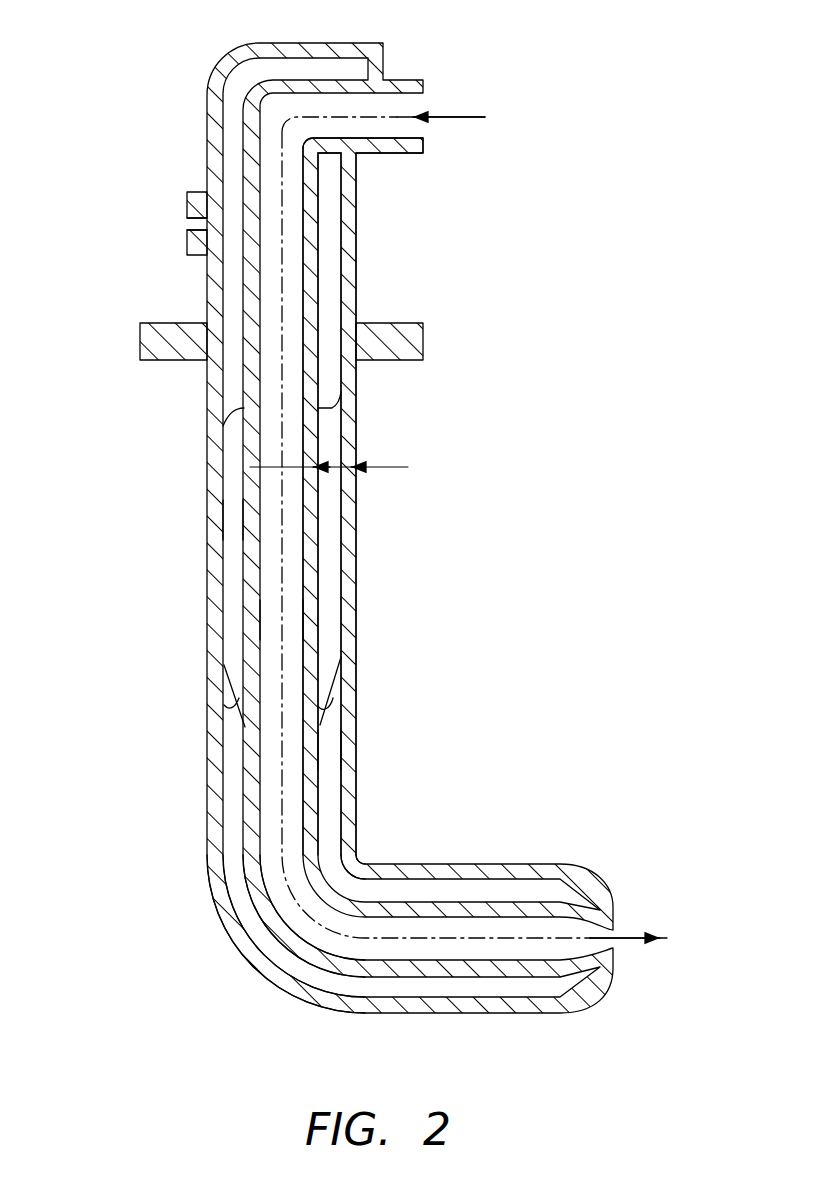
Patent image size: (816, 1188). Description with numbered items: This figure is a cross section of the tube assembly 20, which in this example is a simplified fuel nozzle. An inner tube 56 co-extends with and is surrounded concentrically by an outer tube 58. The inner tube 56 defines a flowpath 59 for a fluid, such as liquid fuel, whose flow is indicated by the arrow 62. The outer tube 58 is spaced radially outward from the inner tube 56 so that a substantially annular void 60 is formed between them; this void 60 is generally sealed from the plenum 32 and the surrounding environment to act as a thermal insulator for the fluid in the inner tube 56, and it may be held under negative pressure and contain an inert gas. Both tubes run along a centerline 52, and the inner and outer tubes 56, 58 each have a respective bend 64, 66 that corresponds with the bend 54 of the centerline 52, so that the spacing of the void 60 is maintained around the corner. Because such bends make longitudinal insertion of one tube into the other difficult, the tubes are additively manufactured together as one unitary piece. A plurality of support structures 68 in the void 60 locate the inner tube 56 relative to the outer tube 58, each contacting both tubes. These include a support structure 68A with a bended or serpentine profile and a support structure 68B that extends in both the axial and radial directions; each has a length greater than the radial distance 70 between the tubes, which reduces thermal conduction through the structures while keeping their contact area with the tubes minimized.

The tube assembly 20 is at (600, 130).
The plenum 32 is at (167, 659).
The centerline 52 is at (327, 225).
The bend of the centerline 54 is at (312, 902).
The inner tube 56 is at (330, 553).
The outer tube 58 is at (365, 625).
The flowpath 59 is at (300, 600).
The void 60 is at (237, 522).
The fluid flow 62 is at (472, 113).
The bend of inner tube 64 is at (263, 915).
The bend of outer tube 66 is at (253, 960).
The support structures 68 is at (294, 559).
The support structure with bended profile 68A is at (222, 428).
The support structure extending axially and radially 68B is at (224, 705).
The radial distance 70 is at (408, 467).